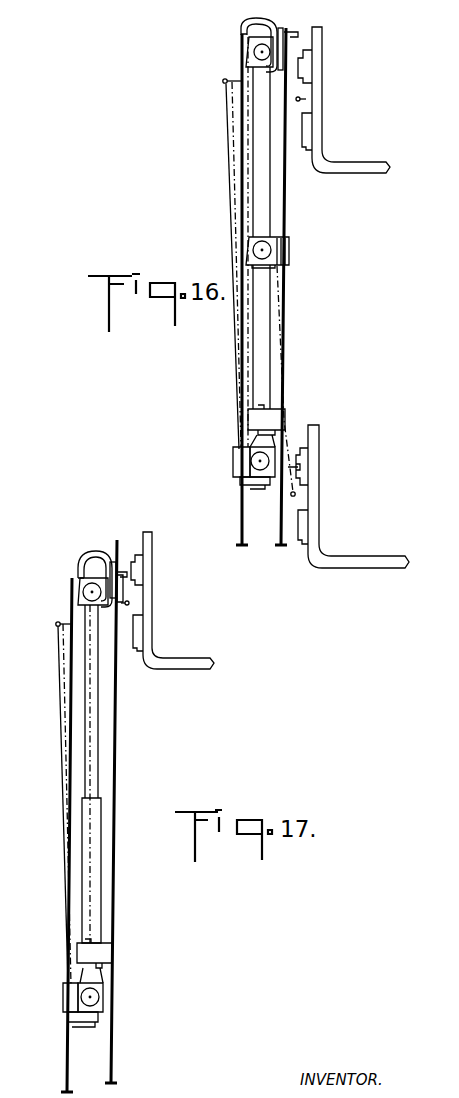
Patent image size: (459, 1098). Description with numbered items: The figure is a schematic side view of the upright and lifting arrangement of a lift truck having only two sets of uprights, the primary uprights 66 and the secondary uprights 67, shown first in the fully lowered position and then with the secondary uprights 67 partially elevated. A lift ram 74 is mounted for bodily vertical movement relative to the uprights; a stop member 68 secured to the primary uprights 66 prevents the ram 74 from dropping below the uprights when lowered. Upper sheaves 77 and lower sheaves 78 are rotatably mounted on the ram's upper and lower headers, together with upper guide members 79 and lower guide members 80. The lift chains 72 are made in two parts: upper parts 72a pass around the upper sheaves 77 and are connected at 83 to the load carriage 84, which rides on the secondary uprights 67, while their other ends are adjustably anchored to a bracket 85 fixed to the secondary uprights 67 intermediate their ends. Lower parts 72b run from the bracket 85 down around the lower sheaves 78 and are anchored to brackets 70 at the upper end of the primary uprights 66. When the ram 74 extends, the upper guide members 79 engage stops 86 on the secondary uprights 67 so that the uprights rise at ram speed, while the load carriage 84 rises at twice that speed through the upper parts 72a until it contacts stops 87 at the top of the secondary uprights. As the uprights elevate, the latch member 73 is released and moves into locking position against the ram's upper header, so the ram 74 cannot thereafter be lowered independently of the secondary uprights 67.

In FIG. 16, the primary uprights 66 is at (241, 382).
In FIG. 17, the primary uprights 66 is at (68, 969).
In FIG. 16, the secondary uprights 67 is at (284, 286).
In FIG. 17, the secondary uprights 67 is at (114, 909).
In FIG. 16, the stop member 68 is at (243, 481).
In FIG. 17, the stop member 68 is at (73, 1027).
In FIG. 16, the brackets 70 is at (223, 79).
In FIG. 17, the brackets 70 is at (57, 622).
In FIG. 16, the lift chains 72 is at (228, 228).
In FIG. 16, the upper chain parts 72a is at (279, 308).
In FIG. 16, the lower chain parts 72b is at (229, 148).
In FIG. 17, the lower chain parts 72b is at (63, 704).
In FIG. 16, the latch member 73 is at (254, 19).
In FIG. 17, the latch member 73 is at (80, 558).
In FIG. 16, the lift ram 74 is at (268, 349).
In FIG. 17, the lift ram 74 is at (93, 853).
In FIG. 16, the upper sheaves 77 is at (266, 243).
In FIG. 17, the upper sheaves 77 is at (88, 586).
In FIG. 16, the lower sheaves 78 is at (252, 462).
In FIG. 17, the lower sheaves 78 is at (92, 997).
In FIG. 16, the upper guide members 79 is at (290, 248).
In FIG. 17, the upper guide members 79 is at (124, 593).
In FIG. 16, the lower guide members 80 is at (233, 455).
In FIG. 17, the lower guide members 80 is at (63, 997).
In FIG. 16, the chain connection 83 is at (295, 496).
In FIG. 16, the load carriage 84 is at (322, 108).
In FIG. 17, the load carriage 84 is at (152, 633).
In FIG. 16, the bracket 85 is at (270, 419).
In FIG. 17, the bracket 85 is at (103, 952).
In FIG. 16, the stops 86 is at (283, 34).
In FIG. 17, the stops 86 is at (113, 565).
In FIG. 16, the stops 87 is at (298, 35).
In FIG. 17, the stops 87 is at (122, 570).